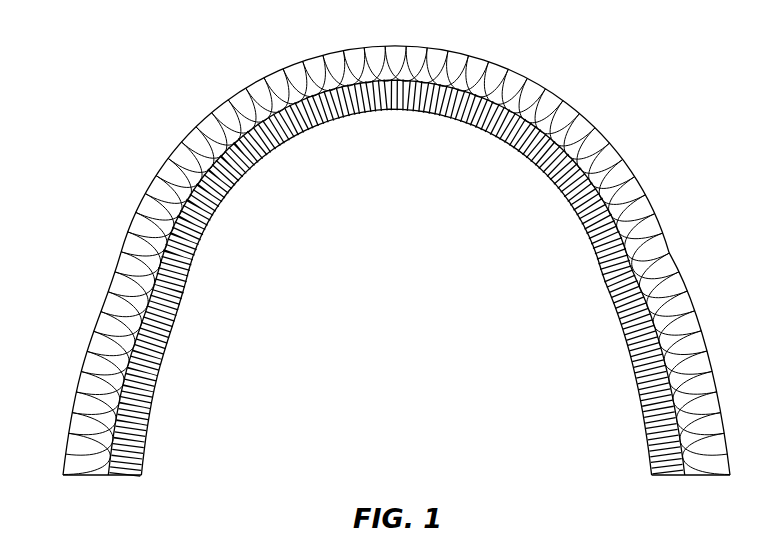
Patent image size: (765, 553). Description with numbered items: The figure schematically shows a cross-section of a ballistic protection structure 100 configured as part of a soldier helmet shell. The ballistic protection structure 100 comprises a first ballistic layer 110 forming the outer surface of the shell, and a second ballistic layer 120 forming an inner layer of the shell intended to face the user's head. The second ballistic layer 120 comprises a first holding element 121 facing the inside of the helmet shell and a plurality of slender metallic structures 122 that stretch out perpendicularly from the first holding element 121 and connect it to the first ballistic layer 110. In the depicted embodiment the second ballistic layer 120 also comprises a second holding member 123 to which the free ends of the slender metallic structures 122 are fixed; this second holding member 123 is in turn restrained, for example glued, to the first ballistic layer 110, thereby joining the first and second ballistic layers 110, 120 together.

The ballistic protection structure 100 is at (208, 103).
The first ballistic layer 110 is at (106, 295).
The second ballistic layer 120 is at (170, 330).
The first holding element 121 is at (630, 360).
The slender metallic structures 122 is at (667, 470).
The second holding member 123 is at (670, 393).